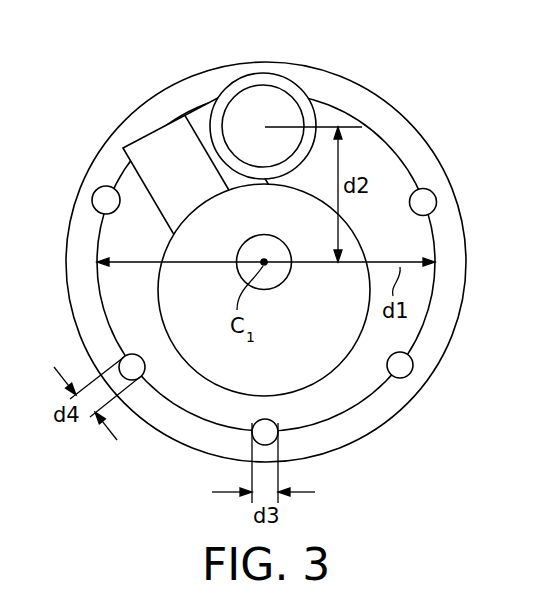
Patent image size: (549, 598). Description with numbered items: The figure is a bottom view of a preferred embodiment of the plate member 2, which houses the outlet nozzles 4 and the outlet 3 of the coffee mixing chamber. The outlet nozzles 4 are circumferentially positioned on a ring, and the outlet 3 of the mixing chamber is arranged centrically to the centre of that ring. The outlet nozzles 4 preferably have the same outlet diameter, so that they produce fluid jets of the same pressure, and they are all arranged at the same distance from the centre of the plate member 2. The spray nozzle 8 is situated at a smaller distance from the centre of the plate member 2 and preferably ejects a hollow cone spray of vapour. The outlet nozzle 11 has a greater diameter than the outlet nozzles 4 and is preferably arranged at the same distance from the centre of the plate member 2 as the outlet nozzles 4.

The plate member 2 is at (390, 125).
The spray nozzle 8 is at (252, 100).
The outlet of the coffee mixing chamber 3 is at (282, 280).
The outlet nozzles 4 is at (92, 193).
The outlet nozzle 11 is at (277, 423).